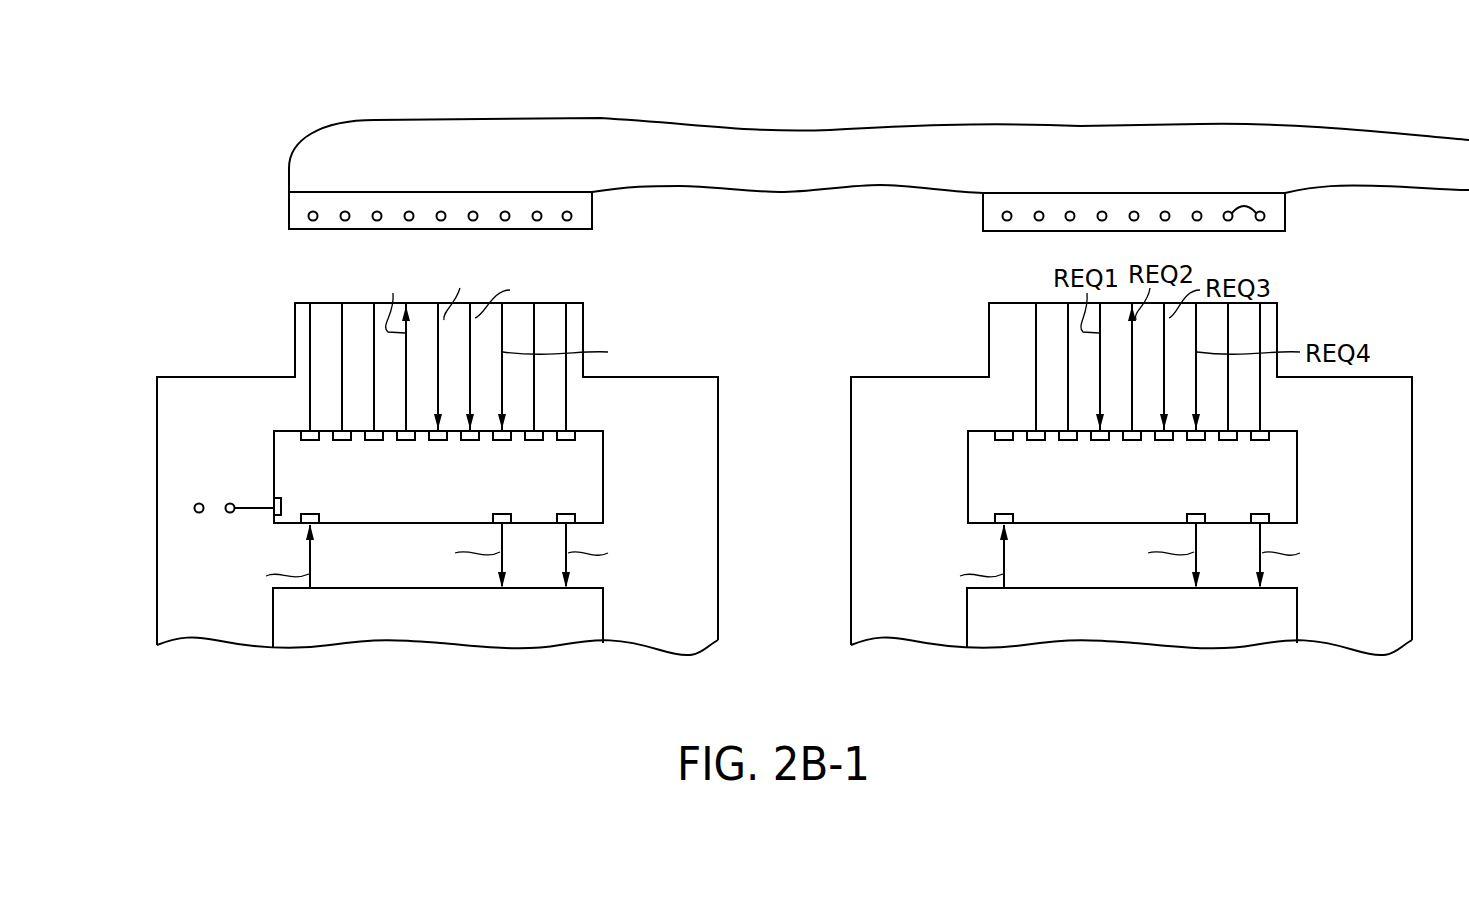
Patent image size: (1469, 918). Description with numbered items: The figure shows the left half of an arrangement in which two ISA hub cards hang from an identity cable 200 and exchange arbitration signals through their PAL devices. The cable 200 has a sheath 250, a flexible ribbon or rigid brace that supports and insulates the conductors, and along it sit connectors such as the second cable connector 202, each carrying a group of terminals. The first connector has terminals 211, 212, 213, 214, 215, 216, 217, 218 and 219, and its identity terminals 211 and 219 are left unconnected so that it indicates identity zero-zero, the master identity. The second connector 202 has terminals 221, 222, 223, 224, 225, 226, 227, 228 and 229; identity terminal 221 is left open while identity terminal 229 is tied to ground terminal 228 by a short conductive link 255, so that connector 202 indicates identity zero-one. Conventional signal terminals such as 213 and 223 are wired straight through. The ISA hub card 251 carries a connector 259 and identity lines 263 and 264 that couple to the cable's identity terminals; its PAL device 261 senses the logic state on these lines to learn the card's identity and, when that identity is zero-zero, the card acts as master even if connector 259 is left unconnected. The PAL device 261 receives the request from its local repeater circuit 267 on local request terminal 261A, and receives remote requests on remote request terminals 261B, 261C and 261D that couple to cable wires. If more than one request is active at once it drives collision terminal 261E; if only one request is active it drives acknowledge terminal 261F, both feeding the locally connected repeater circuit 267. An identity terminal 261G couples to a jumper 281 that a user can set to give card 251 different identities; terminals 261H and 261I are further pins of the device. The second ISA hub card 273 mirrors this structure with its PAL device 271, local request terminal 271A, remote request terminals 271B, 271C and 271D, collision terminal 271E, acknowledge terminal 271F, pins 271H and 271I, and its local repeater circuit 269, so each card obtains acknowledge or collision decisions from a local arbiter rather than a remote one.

The identity cable 200 is at (836, 92).
The second cable connector 202 is at (296, 200).
The identity terminal 211 is at (306, 215).
The terminal 212 is at (345, 210).
The terminal 213 is at (379, 210).
The terminal 214 is at (409, 221).
The terminal 215 is at (441, 221).
The terminal 216 is at (473, 210).
The terminal 217 is at (506, 210).
The terminal 218 is at (539, 210).
The identity terminal 219 is at (572, 216).
The identity terminal 221 is at (1003, 219).
The terminal 222 is at (1039, 210).
The terminal 223 is at (1070, 210).
The terminal 224 is at (1102, 221).
The terminal 225 is at (1134, 221).
The terminal 226 is at (1165, 210).
The terminal 227 is at (1197, 210).
The ground terminal 228 is at (1228, 221).
The identity terminal 229 is at (1265, 216).
The sheath 250 is at (808, 175).
The ISA hub card 251 is at (203, 628).
The conductive link 255 is at (1249, 207).
The connector 259 is at (576, 312).
The PAL device 261 is at (275, 471).
The local request terminal 261A is at (319, 517).
The remote request terminal 261B is at (426, 367).
The remote request terminal 261C is at (458, 367).
The remote request terminal 261D is at (490, 367).
The collision terminal 261E is at (576, 520).
The acknowledge terminal 261F is at (500, 514).
The identity terminal 261G is at (281, 498).
The PAL pin 261H is at (578, 437).
The PAL pin 261I is at (307, 428).
The identity line 263 is at (311, 320).
The identity line 264 is at (567, 406).
The repeater circuit 267 is at (432, 640).
The repeater circuit 269 is at (1126, 640).
The PAL device 271 is at (977, 481).
The local request terminal 271A is at (1013, 517).
The remote request terminal 271B is at (1088, 367).
The remote request terminal 271C is at (1151, 367).
The remote request terminal 271D is at (1183, 367).
The collision terminal 271E is at (1270, 520).
The acknowledge terminal 271F is at (1194, 514).
The PAL pin 271H is at (1272, 437).
The PAL pin 271I is at (1001, 428).
The ISA hub card 273 is at (897, 628).
The jumper 281 is at (202, 512).